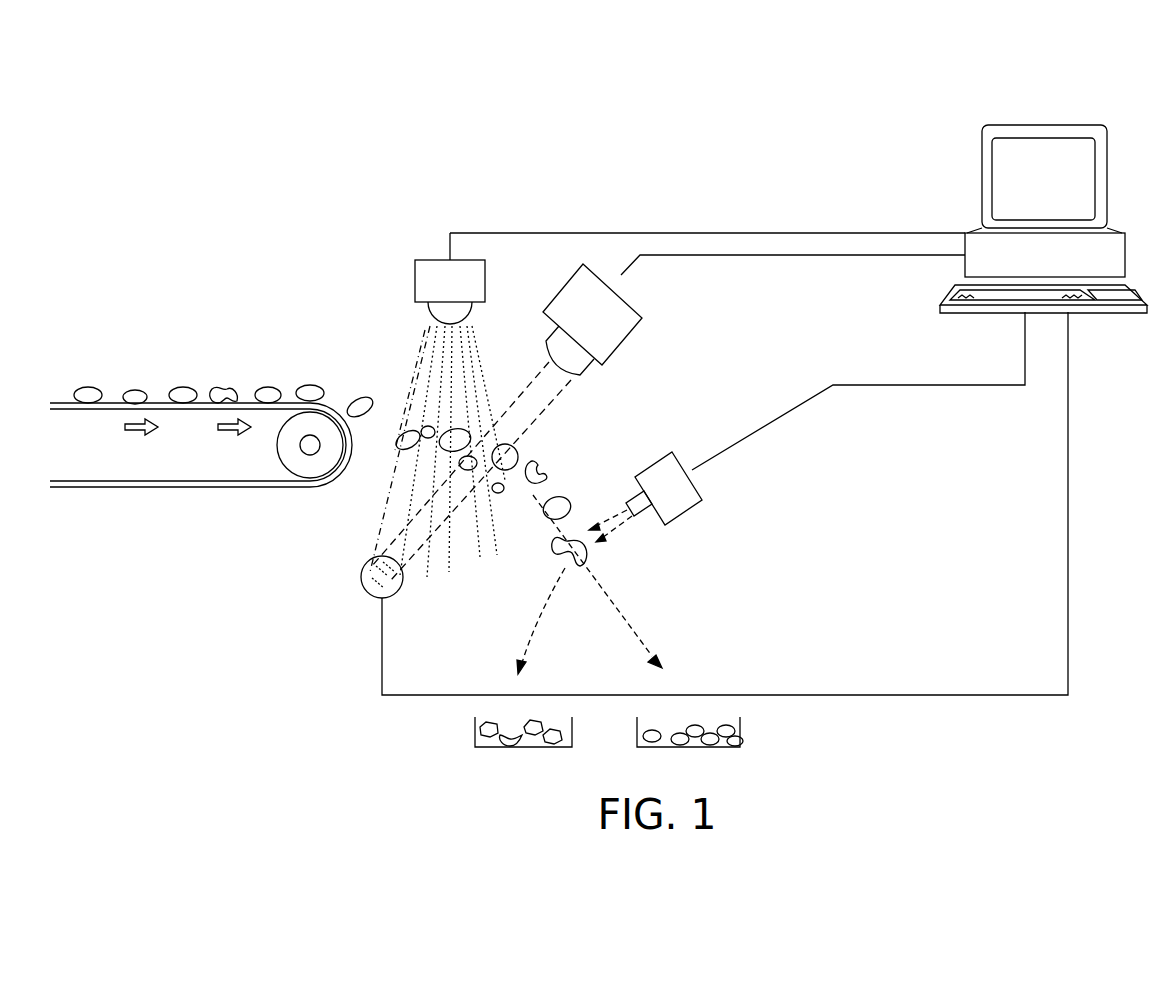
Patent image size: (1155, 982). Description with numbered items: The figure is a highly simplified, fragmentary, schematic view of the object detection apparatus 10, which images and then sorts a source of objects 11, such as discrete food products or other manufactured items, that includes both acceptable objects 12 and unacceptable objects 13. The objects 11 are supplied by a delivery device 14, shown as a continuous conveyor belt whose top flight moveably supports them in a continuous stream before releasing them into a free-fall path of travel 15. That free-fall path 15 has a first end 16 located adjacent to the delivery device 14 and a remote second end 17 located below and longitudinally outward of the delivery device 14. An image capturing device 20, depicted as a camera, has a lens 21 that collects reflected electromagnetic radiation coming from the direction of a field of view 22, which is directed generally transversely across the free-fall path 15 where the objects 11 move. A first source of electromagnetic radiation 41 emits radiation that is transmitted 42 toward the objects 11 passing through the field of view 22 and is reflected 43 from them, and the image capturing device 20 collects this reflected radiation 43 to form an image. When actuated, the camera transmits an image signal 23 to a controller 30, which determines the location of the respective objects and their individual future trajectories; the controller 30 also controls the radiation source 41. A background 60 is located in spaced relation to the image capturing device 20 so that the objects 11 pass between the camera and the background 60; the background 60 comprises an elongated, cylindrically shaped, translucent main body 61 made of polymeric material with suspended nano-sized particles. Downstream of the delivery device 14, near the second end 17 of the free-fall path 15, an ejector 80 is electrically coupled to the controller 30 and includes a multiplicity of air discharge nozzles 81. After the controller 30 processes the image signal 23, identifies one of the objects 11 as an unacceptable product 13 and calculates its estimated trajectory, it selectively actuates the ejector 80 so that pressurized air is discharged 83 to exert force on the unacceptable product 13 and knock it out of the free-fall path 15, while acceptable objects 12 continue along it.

The object detection apparatus 10 is at (673, 175).
The source of objects 11 is at (262, 388).
The acceptable objects 12 is at (312, 384).
The unacceptable objects 13 is at (572, 537).
The delivery device 14 is at (154, 449).
The free-fall path of travel 15 is at (619, 602).
The first end 16 is at (376, 404).
The second end 17 is at (636, 630).
The image capturing device 20 is at (577, 319).
The lens 21 is at (547, 340).
The field of view 22 is at (546, 396).
The image signal 23 is at (810, 257).
The controller 30 is at (1033, 266).
The first source of electromagnetic radiation 41 is at (440, 296).
The transmitted electromagnetic radiation 42 is at (418, 363).
The reflected electromagnetic radiation 43 is at (526, 384).
The background 60 is at (666, 503).
The main body 61 is at (362, 599).
The ejector 80 is at (658, 498).
The air discharge nozzles 81 is at (633, 498).
The discharged pressurized air 83 is at (618, 521).